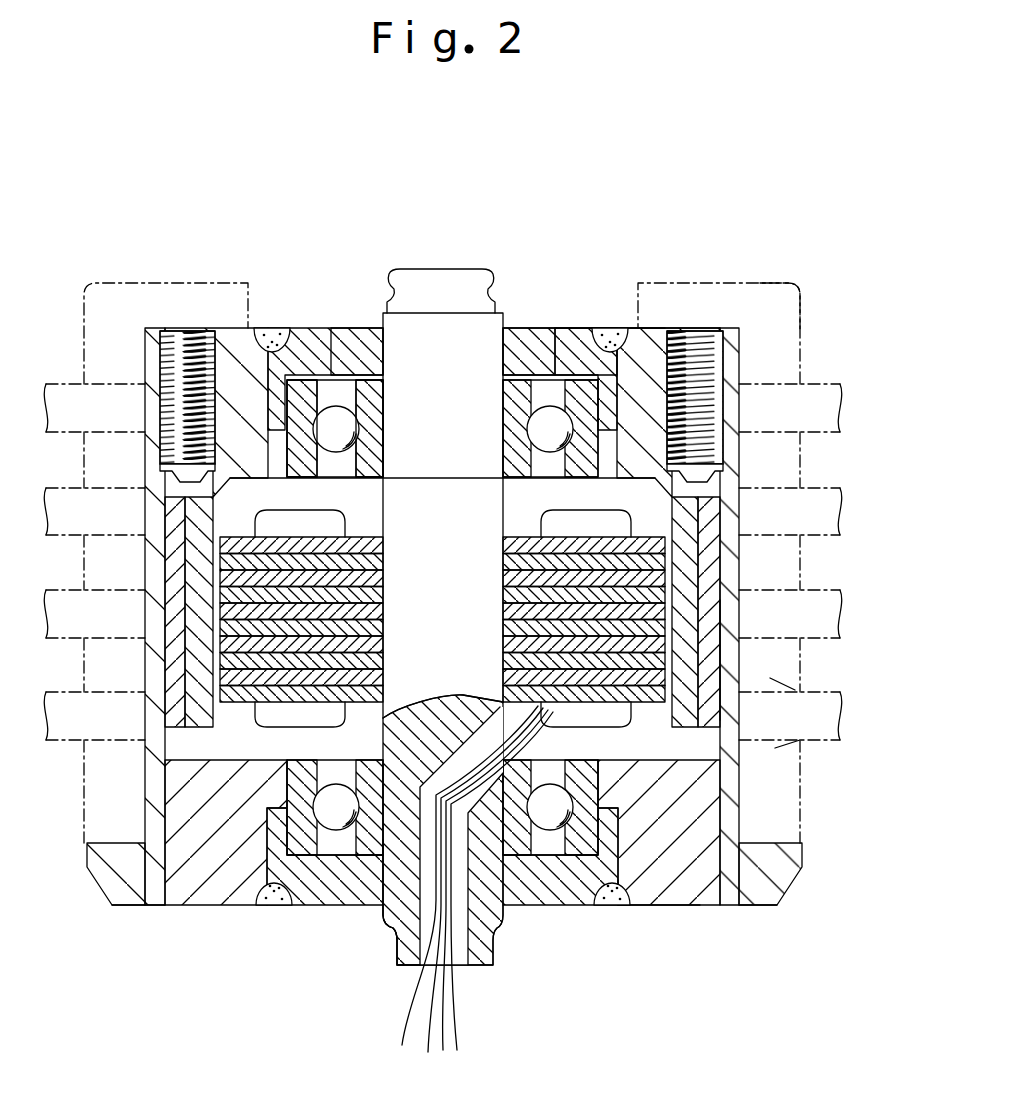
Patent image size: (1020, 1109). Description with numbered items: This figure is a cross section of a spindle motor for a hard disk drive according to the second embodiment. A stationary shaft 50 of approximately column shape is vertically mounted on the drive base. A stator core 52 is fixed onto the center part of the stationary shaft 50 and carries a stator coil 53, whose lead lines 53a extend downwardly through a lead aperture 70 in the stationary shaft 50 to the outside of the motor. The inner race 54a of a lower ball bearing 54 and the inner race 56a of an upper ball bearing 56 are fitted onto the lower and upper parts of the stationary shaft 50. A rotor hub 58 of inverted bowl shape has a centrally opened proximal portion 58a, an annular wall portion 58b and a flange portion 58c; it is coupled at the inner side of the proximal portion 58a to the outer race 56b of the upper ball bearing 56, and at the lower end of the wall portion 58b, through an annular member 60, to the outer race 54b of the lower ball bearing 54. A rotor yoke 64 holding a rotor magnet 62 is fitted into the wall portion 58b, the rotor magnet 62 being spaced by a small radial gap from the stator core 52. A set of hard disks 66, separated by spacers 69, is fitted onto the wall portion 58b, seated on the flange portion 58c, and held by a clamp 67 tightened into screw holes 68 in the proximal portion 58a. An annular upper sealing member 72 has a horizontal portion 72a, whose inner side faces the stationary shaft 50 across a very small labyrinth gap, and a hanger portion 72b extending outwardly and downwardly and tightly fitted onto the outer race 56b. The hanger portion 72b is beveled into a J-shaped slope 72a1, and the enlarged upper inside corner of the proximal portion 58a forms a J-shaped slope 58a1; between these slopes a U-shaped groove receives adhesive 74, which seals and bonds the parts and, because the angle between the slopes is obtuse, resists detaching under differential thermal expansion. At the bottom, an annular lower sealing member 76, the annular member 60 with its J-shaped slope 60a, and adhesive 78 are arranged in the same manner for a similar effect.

The stationary shaft 50 is at (420, 293).
The stator core 52 is at (375, 548).
The stator coil 53 is at (530, 506).
The lead lines 53a is at (452, 995).
The lower ball bearing 54 is at (362, 760).
The inner race of lower ball bearing 54a is at (388, 720).
The outer race of lower ball bearing 54b is at (372, 650).
The upper ball bearing 56 is at (340, 490).
The inner race of upper ball bearing 56a is at (370, 427).
The outer race of upper ball bearing 56b is at (300, 390).
The rotor hub 58 is at (730, 328).
The proximal portion 58a is at (693, 328).
The J-shaped slope 58a1 is at (650, 328).
The annular wall portion 58b is at (732, 655).
The flange portion 58c is at (772, 880).
The annular member 60 is at (693, 888).
The J-shaped slope 60a is at (630, 905).
The rotor magnet 62 is at (712, 763).
The rotor yoke 64 is at (705, 668).
The hard disks 66 is at (818, 545).
The clamp 67 is at (788, 292).
The screw holes 68 is at (697, 328).
The spacers 69 is at (787, 750).
The lead aperture 70 is at (383, 922).
The upper sealing member 72 is at (525, 328).
The horizontal portion 72a is at (520, 328).
The hanger portion 72b is at (553, 328).
The J-shaped slope 72a1 is at (598, 328).
The adhesive 74 is at (607, 328).
The lower sealing member 76 is at (553, 905).
The adhesive 78 is at (612, 905).